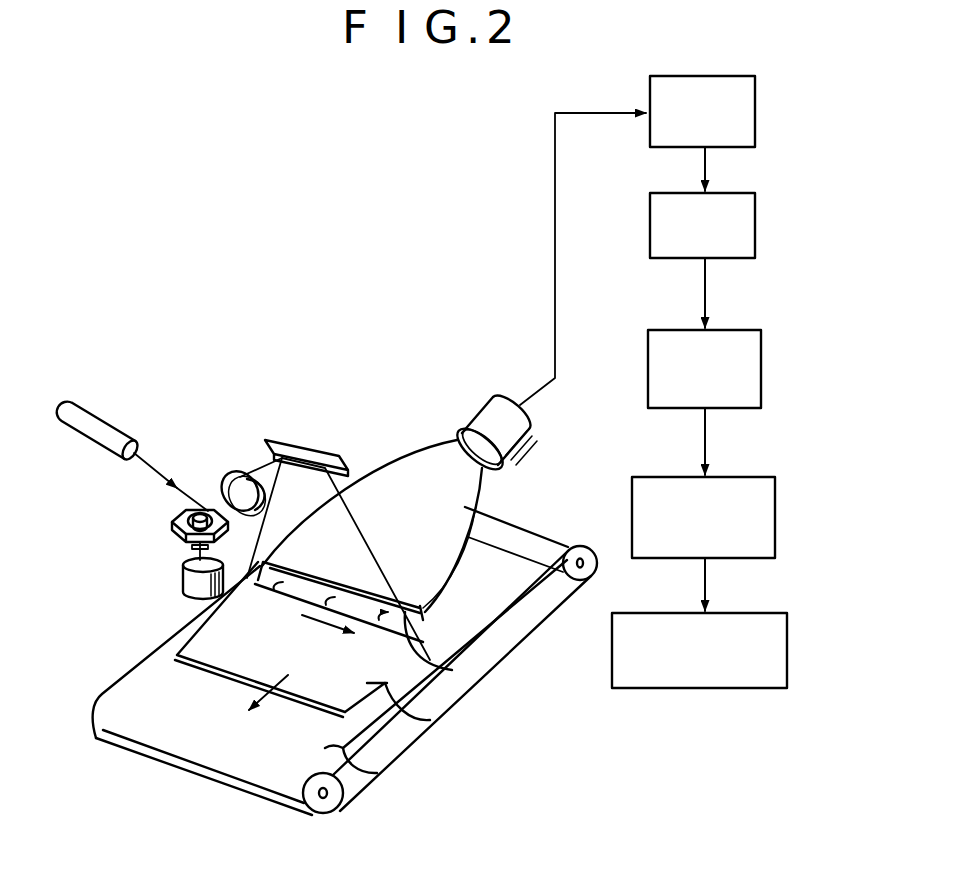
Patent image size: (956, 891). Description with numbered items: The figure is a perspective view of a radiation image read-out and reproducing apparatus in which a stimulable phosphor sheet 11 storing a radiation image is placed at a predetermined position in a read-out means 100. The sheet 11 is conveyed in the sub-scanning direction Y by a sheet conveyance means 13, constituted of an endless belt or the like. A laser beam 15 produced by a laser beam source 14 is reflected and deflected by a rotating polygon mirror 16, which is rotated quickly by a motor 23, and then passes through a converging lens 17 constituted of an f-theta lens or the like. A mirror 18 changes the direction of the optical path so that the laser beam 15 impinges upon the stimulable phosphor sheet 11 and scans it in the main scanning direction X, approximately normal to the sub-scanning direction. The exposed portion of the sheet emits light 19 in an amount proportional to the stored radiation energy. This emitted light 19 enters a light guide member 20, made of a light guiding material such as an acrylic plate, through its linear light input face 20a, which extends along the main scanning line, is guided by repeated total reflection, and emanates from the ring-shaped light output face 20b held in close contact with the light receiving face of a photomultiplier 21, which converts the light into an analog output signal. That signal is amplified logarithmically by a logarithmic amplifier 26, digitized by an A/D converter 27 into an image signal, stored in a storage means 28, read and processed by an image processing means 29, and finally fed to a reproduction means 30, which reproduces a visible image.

The stimulable phosphor sheet 11 is at (430, 720).
The sheet conveyance means 13 is at (377, 773).
The laser beam source 14 is at (118, 423).
The laser beam 15 is at (165, 474).
The rotating polygon mirror 16 is at (178, 523).
The converging lens 17 is at (234, 470).
The mirror 18 is at (318, 450).
The emitted light 19 is at (288, 590).
The light guide member 20 is at (421, 490).
The light input face 20a is at (452, 670).
The light output face 20b is at (486, 482).
The photomultiplier 21 is at (491, 416).
The motor 23 is at (183, 578).
The logarithmic amplifier 26 is at (757, 130).
The A/D converter 27 is at (757, 232).
The storage means 28 is at (761, 380).
The image processing means 29 is at (775, 485).
The reproduction means 30 is at (787, 640).
The read-out means 100 is at (293, 412).